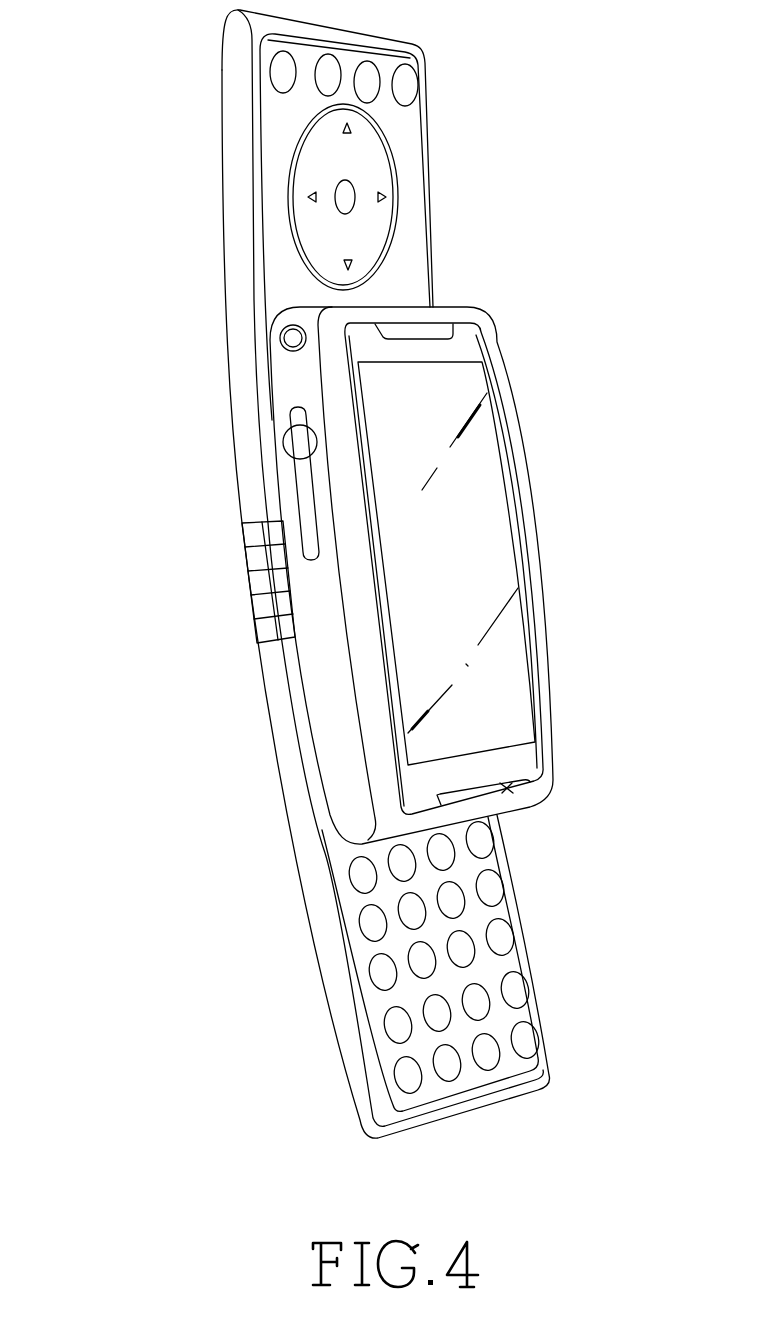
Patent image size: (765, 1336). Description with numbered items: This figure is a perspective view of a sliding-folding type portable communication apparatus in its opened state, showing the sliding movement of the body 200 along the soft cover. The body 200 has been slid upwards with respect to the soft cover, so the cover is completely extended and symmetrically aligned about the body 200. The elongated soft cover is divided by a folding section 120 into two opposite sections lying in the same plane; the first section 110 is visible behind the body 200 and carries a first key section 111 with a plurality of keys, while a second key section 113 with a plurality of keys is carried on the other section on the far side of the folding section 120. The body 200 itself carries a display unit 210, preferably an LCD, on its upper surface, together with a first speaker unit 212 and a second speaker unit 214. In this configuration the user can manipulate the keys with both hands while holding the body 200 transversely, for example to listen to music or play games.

The first section 110 is at (232, 197).
The first key section 111 is at (372, 165).
The second key section 113 is at (520, 988).
The folding section 120 is at (245, 643).
The body 200 is at (568, 608).
The display unit 210 is at (477, 488).
The first speaker unit 212 is at (443, 324).
The second speaker unit 214 is at (520, 785).